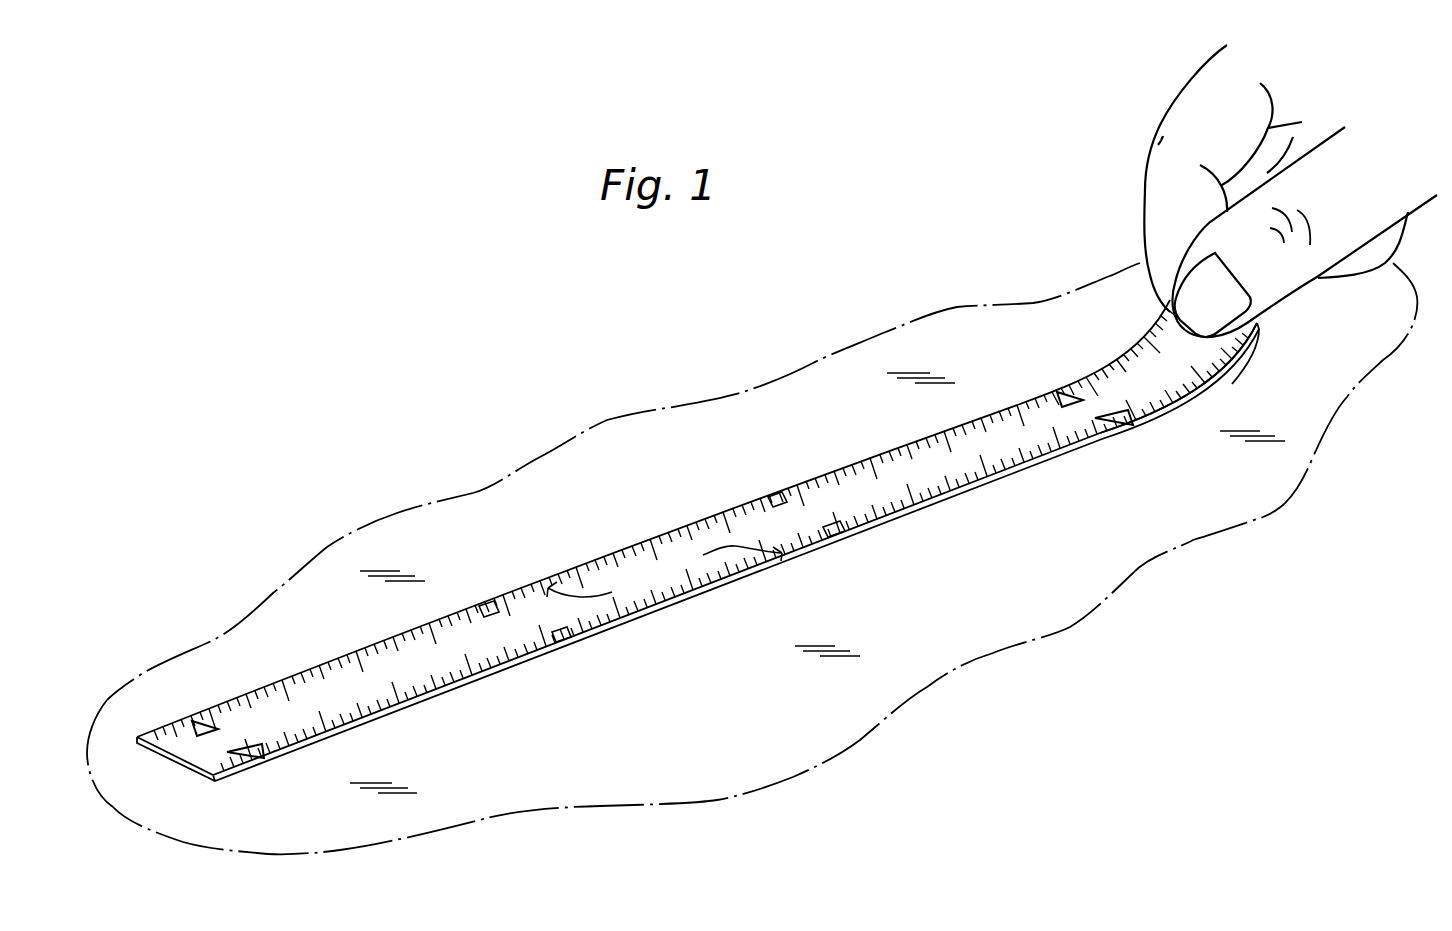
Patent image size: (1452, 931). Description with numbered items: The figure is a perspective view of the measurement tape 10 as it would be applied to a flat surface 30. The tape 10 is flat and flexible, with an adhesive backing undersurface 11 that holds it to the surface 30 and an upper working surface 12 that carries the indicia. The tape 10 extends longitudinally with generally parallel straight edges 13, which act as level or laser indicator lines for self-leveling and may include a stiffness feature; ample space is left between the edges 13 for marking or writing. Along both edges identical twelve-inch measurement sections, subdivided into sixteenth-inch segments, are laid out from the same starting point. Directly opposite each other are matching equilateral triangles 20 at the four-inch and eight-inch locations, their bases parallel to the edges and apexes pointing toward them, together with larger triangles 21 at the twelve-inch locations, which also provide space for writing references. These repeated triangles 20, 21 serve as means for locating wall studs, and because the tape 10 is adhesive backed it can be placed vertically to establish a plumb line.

The measurement tape 10 is at (692, 509).
The adhesive backing undersurface 11 is at (1252, 345).
The working surface 12 is at (1195, 362).
The straight edges 13 is at (593, 563).
The equilateral triangles 20 is at (768, 496).
The larger triangles 21 is at (200, 720).
The flat surface 30 is at (757, 752).